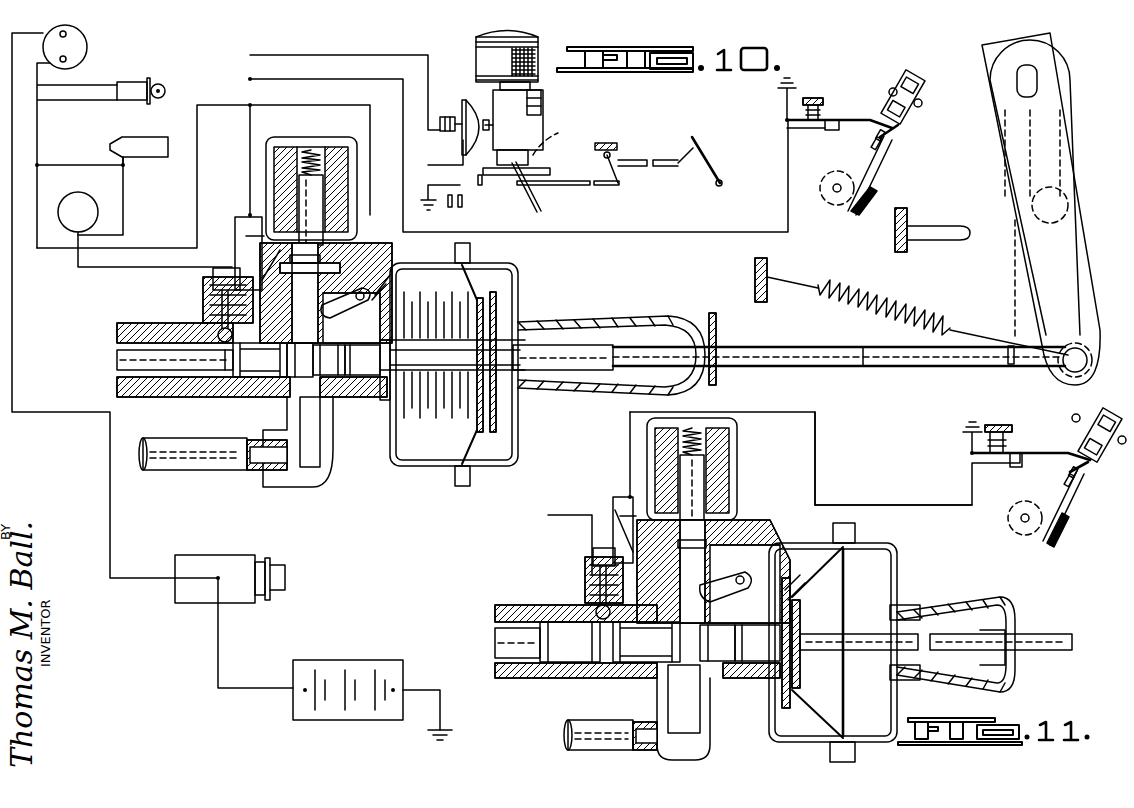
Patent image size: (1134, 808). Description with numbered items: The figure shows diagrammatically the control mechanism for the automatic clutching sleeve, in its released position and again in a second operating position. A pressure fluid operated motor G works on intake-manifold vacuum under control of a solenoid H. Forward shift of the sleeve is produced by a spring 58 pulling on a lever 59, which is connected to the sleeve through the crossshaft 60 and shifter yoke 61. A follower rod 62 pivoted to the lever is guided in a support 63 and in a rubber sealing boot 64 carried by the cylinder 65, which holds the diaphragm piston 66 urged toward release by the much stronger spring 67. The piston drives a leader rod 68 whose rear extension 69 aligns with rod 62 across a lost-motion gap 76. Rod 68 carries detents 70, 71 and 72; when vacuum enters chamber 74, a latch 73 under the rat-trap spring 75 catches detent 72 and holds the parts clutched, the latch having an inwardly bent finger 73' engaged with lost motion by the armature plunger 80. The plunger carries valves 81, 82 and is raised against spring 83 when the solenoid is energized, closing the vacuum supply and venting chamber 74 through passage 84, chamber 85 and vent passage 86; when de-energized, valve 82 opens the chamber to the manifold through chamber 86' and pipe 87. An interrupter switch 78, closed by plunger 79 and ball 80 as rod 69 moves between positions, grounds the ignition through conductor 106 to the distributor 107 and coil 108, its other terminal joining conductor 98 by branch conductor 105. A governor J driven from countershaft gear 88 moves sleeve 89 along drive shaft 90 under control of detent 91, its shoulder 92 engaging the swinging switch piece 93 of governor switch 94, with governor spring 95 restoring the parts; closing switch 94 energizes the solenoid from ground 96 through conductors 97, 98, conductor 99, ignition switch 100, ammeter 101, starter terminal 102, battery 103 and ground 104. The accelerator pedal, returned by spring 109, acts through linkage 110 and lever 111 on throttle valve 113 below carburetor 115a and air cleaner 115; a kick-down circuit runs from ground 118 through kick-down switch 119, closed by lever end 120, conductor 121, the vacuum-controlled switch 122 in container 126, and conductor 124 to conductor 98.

In FIG. 10, the spring 58 is at (868, 296).
In FIG. 10, the lever 59 is at (1082, 232).
In FIG. 10, the crossshaft 60 is at (1035, 80).
In FIG. 10, the shifter yoke 61 is at (1010, 185).
In FIG. 10, the follower rod 62 is at (850, 366).
In FIG. 11, the follower rod 62 is at (1052, 633).
In FIG. 10, the support 63 is at (716, 340).
In FIG. 10, the rubber sealing boot 64 is at (640, 318).
In FIG. 11, the rubber sealing boot 64 is at (938, 606).
In FIG. 10, the cylinder 65 is at (455, 476).
In FIG. 11, the cylinder 65 is at (830, 750).
In FIG. 10, the diaphragm piston 66 is at (480, 290).
In FIG. 11, the diaphragm piston 66 is at (835, 590).
In FIG. 10, the spring 67 is at (446, 300).
In FIG. 11, the spring 67 is at (810, 705).
In FIG. 10, the leader rod 68 is at (340, 397).
In FIG. 10, the rear extension 69 is at (560, 350).
In FIG. 11, the rear extension 69 is at (878, 652).
In FIG. 10, the detent 70 is at (222, 397).
In FIG. 11, the detent 70 is at (637, 641).
In FIG. 10, the detent 71 is at (287, 397).
In FIG. 11, the detent 71 is at (683, 712).
In FIG. 10, the detent 72 is at (382, 400).
In FIG. 10, the latch 73 is at (329, 360).
In FIG. 11, the latch 73 is at (717, 643).
In FIG. 10, the inwardly bent finger 73' is at (362, 360).
In FIG. 10, the chamber 74 is at (380, 280).
In FIG. 11, the chamber 74 is at (798, 560).
In FIG. 11, the rat-trap spring 75 is at (728, 620).
In FIG. 11, the gap 76 is at (952, 685).
In FIG. 10, the interrupter switch 78 is at (203, 290).
In FIG. 11, the interrupter switch 78 is at (585, 572).
In FIG. 10, the plunger 79 is at (213, 300).
In FIG. 11, the plunger 79 is at (593, 580).
In FIG. 10, the armature plunger 80 is at (338, 197).
In FIG. 11, the armature plunger 80 is at (730, 480).
In FIG. 10, the valve 81 is at (350, 230).
In FIG. 11, the valve 81 is at (710, 525).
In FIG. 10, the valve 82 is at (360, 262).
In FIG. 11, the valve 82 is at (652, 612).
In FIG. 10, the spring 83 is at (310, 147).
In FIG. 11, the spring 83 is at (700, 428).
In FIG. 10, the passage 84 is at (370, 292).
In FIG. 11, the passage 84 is at (740, 572).
In FIG. 10, the chamber 85 is at (332, 264).
In FIG. 11, the chamber 85 is at (708, 544).
In FIG. 10, the vent passage 86 is at (241, 257).
In FIG. 11, the vent passage 86 is at (631, 531).
In FIG. 10, the chamber 86' is at (261, 357).
In FIG. 11, the chamber 86' is at (610, 640).
In FIG. 10, the pipe 87 is at (175, 470).
In FIG. 11, the pipe 87 is at (596, 750).
In FIG. 10, the countershaft gear 88 is at (835, 207).
In FIG. 11, the countershaft gear 88 is at (1020, 505).
In FIG. 10, the sleeve 89 is at (900, 128).
In FIG. 11, the sleeve 89 is at (1088, 465).
In FIG. 10, the drive shaft 90 is at (880, 168).
In FIG. 11, the drive shaft 90 is at (1065, 515).
In FIG. 10, the detent 91 is at (896, 150).
In FIG. 11, the detent 91 is at (1080, 484).
In FIG. 10, the shoulder 92 is at (905, 137).
In FIG. 11, the shoulder 92 is at (1084, 474).
In FIG. 10, the swinging switch piece 93 is at (848, 120).
In FIG. 11, the swinging switch piece 93 is at (1020, 450).
In FIG. 10, the governor switch 94 is at (828, 130).
In FIG. 11, the governor switch 94 is at (1022, 460).
In FIG. 10, the governor spring 95 is at (922, 100).
In FIG. 11, the governor spring 95 is at (1100, 418).
In FIG. 10, the ground 96 is at (796, 85).
In FIG. 11, the ground 96 is at (962, 426).
In FIG. 10, the conductor 97 is at (626, 232).
In FIG. 11, the conductor 97 is at (922, 502).
In FIG. 10, the conductor 98 is at (250, 148).
In FIG. 11, the conductor 98 is at (630, 450).
In FIG. 10, the conductor 99 is at (158, 248).
In FIG. 11, the conductor 99 is at (780, 475).
In FIG. 10, the ignition switch 100 is at (136, 82).
In FIG. 10, the ammeter 101 is at (80, 40).
In FIG. 10, the starter terminal 102 is at (225, 555).
In FIG. 10, the battery 103 is at (352, 660).
In FIG. 10, the ground 104 is at (450, 742).
In FIG. 10, the branch conductor 105 is at (235, 226).
In FIG. 11, the branch conductor 105 is at (613, 505).
In FIG. 10, the conductor 106 is at (132, 267).
In FIG. 11, the conductor 106 is at (586, 515).
In FIG. 10, the distributor 107 is at (82, 203).
In FIG. 10, the coil 108 is at (136, 140).
In FIG. 10, the spring 109 is at (715, 180).
In FIG. 10, the linkage 110 is at (652, 166).
In FIG. 10, the lever 111 is at (545, 186).
In FIG. 10, the throttle valve 113 is at (566, 133).
In FIG. 10, the air cleaner 115 is at (540, 50).
In FIG. 10, the carburetor 115a is at (540, 125).
In FIG. 10, the ground 118 is at (438, 213).
In FIG. 10, the kick-down switch 119 is at (478, 186).
In FIG. 10, the lever end 120 is at (538, 210).
In FIG. 10, the conductor 121 is at (442, 166).
In FIG. 10, the switch 122 is at (438, 117).
In FIG. 10, the conductor 124 is at (392, 55).
In FIG. 10, the container 126 is at (462, 105).
In FIG. 10, the solenoid H is at (284, 140).
In FIG. 10, the pressure fluid operated motor G is at (518, 272).
In FIG. 11, the pressure fluid operated motor G is at (862, 543).
In FIG. 10, the governor J is at (895, 75).
In FIG. 11, the governor J is at (1118, 420).